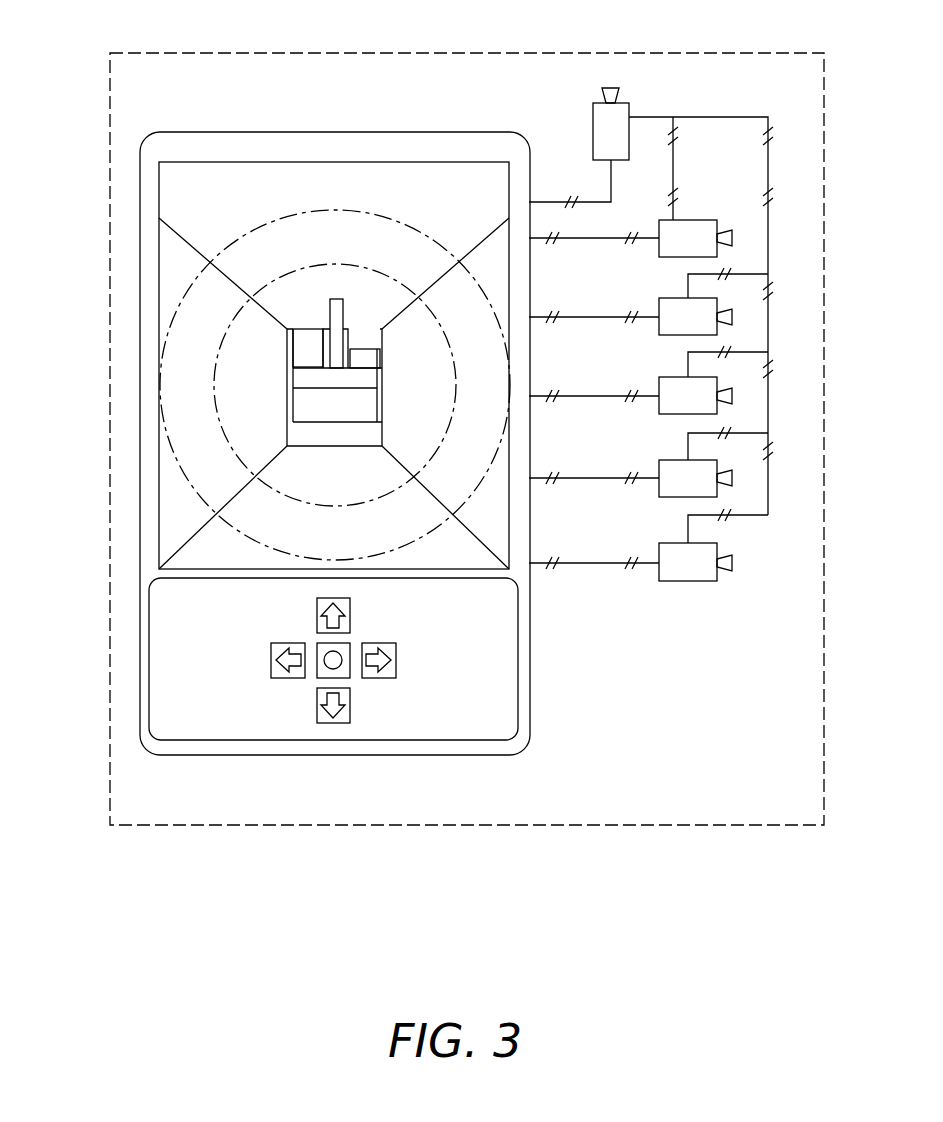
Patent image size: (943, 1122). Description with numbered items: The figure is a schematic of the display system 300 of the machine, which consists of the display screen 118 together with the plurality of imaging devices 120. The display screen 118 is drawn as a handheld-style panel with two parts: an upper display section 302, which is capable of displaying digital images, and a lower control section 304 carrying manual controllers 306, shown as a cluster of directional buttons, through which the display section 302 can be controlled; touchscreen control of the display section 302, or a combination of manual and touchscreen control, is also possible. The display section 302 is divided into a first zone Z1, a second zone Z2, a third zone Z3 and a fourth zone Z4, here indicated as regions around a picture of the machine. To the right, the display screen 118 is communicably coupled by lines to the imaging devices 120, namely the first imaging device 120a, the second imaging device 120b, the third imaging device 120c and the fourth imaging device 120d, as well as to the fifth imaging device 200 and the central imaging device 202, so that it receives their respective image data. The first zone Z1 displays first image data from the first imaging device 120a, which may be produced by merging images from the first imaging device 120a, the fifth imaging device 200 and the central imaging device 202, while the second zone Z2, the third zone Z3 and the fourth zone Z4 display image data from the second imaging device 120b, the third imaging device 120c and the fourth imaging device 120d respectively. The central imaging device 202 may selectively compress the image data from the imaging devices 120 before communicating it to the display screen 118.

The display system 300 is at (619, 51).
The display section 302 is at (138, 184).
The display screen 118 is at (138, 302).
The control section 304 is at (138, 639).
The manual controllers 306 is at (413, 667).
The central imaging device 202 is at (593, 108).
The plurality of imaging devices 120 is at (693, 189).
The first imaging device 120a is at (732, 238).
The second imaging device 120b is at (732, 317).
The third imaging device 120c is at (732, 396).
The fourth imaging device 120d is at (732, 478).
The fifth imaging device 200 is at (732, 563).
The first zone Z1 is at (340, 180).
The second zone Z2 is at (275, 520).
The third zone Z3 is at (233, 400).
The fourth zone Z4 is at (432, 378).